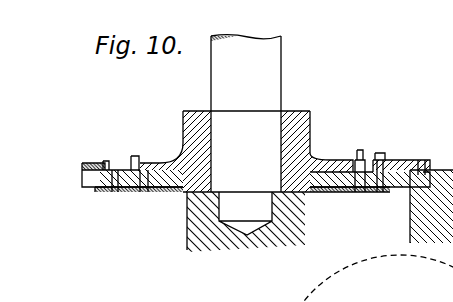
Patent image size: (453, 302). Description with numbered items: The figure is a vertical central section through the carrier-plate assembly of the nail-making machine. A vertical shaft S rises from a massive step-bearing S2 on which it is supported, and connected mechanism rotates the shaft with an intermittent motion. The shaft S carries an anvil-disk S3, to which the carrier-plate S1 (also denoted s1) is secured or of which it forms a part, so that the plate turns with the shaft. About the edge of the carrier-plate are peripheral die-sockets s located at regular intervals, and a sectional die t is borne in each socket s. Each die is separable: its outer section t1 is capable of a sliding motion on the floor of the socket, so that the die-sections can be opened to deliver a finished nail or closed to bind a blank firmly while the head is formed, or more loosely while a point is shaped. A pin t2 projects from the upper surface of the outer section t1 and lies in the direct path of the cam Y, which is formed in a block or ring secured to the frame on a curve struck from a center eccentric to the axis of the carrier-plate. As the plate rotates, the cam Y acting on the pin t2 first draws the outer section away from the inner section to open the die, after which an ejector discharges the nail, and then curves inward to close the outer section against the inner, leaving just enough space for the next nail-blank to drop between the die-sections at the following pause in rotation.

The vertical shaft S is at (272, 67).
The carrier-plate S1 is at (192, 192).
The carrier-plate s1 is at (82, 174).
The socket s is at (92, 178).
The step-bearing S2 is at (188, 249).
The anvil-disk S3 is at (332, 161).
The sectional die t is at (147, 188).
The outer section of die t1 is at (117, 188).
The pin t2 is at (107, 162).
The cam Y is at (411, 158).